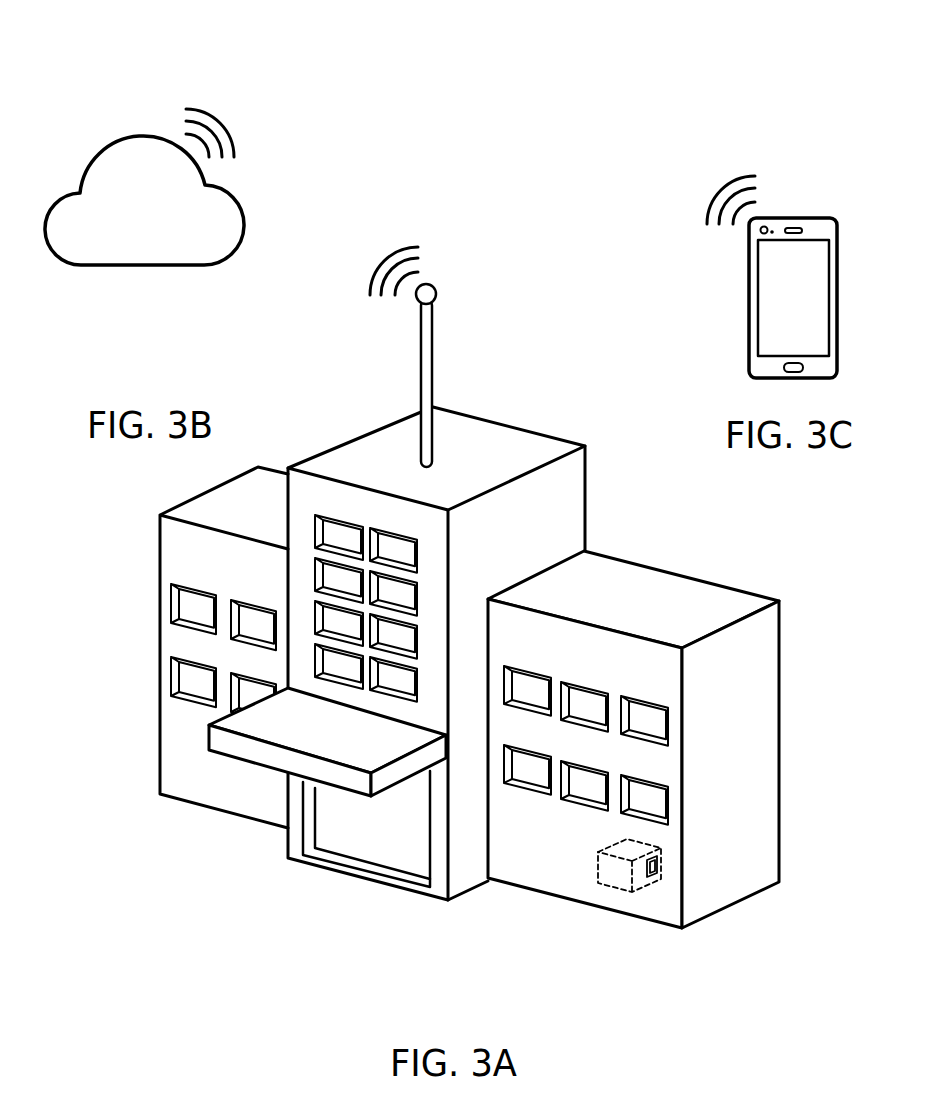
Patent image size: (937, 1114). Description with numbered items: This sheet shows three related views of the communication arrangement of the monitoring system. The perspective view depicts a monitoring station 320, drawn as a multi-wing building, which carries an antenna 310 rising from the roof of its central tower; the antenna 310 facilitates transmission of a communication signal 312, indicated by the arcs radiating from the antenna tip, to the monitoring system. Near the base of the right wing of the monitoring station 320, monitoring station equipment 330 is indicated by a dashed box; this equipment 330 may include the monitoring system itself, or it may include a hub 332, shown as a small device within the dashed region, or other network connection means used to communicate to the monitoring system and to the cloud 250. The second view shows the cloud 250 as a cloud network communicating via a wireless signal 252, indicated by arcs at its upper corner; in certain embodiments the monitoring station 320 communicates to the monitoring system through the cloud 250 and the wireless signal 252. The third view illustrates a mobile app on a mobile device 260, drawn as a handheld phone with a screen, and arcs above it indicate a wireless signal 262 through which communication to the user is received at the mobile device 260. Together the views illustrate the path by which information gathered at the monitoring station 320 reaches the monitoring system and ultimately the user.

In FIG. 3B, the cloud 250 is at (118, 250).
In FIG. 3B, the wireless signal 252 is at (230, 128).
In FIG. 3C, the mobile device 260 is at (773, 307).
In FIG. 3C, the wireless signal 262 is at (727, 178).
In FIG. 3A, the antenna 310 is at (432, 363).
In FIG. 3A, the communication signal 312 is at (395, 245).
In FIG. 3A, the monitoring station 320 is at (656, 597).
In FIG. 3A, the monitoring station equipment 330 is at (613, 872).
In FIG. 3A, the hub 332 is at (658, 870).